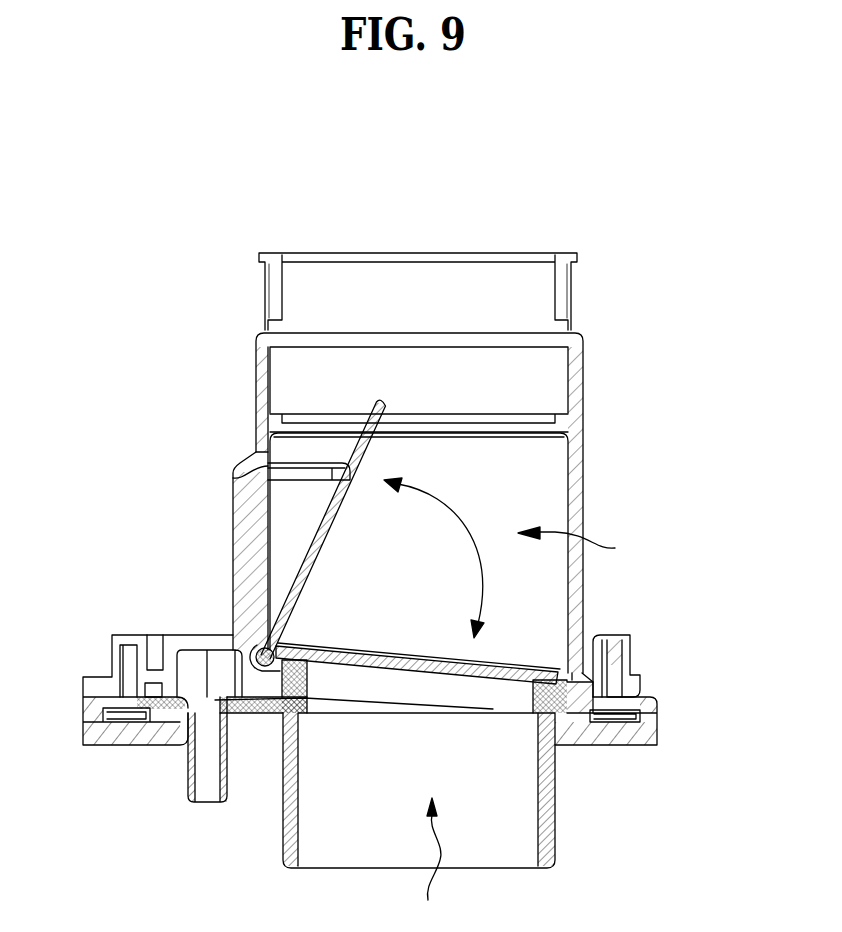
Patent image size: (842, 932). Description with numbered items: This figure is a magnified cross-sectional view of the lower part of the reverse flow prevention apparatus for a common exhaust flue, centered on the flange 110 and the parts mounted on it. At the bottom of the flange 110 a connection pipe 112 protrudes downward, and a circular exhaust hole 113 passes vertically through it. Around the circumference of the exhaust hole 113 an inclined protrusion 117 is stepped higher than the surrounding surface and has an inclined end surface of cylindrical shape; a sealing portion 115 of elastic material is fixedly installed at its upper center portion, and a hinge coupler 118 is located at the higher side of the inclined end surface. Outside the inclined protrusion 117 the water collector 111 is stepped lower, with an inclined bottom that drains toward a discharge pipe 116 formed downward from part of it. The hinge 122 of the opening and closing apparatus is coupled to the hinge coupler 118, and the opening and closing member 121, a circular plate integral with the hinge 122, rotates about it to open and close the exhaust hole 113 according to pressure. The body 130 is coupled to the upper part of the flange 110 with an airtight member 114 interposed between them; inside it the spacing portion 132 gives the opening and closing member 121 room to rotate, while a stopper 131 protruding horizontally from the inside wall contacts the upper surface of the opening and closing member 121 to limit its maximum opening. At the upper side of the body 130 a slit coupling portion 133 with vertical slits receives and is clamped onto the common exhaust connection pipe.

The flange 110 is at (602, 705).
The water collector 111 is at (222, 700).
The connection pipe 112 is at (556, 808).
The exhaust hole 113 is at (428, 863).
The airtight member 114 is at (116, 678).
The sealing portion 115 is at (592, 674).
The discharge pipe 116 is at (195, 775).
The inclined protrusion 117 is at (313, 672).
The hinge coupler 118 is at (258, 672).
The opening and closing member 121 is at (304, 557).
The hinge 122 is at (285, 706).
The body 130 is at (243, 495).
The stopper 131 is at (233, 474).
The spacing portion 132 is at (460, 553).
The slit coupling portion 133 is at (567, 288).